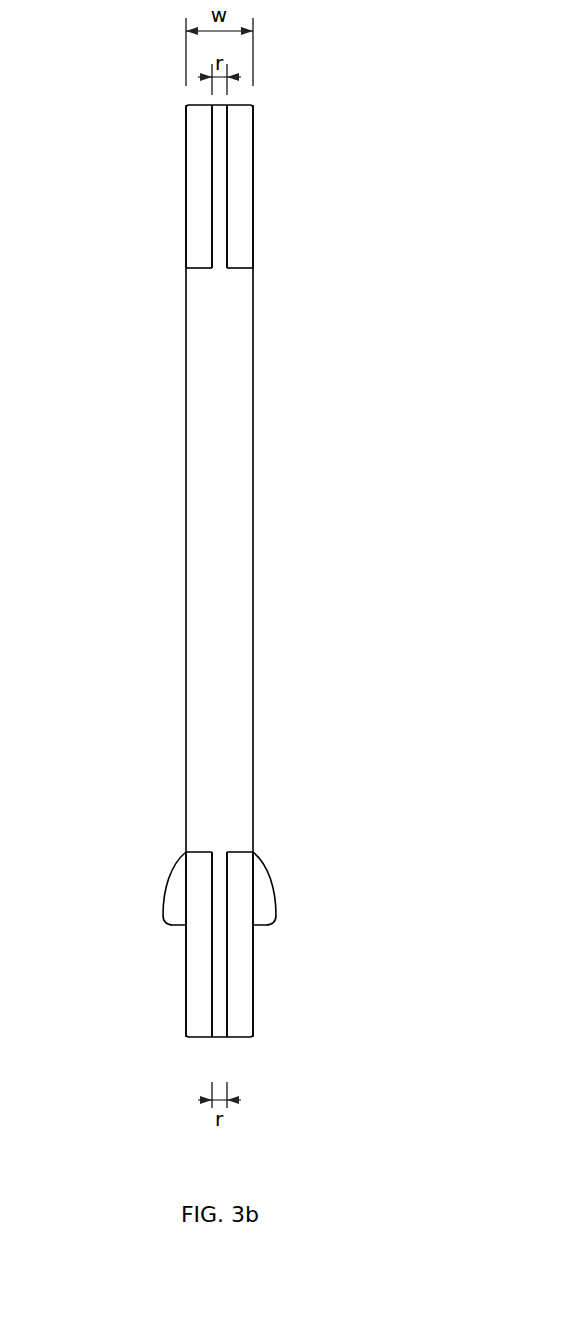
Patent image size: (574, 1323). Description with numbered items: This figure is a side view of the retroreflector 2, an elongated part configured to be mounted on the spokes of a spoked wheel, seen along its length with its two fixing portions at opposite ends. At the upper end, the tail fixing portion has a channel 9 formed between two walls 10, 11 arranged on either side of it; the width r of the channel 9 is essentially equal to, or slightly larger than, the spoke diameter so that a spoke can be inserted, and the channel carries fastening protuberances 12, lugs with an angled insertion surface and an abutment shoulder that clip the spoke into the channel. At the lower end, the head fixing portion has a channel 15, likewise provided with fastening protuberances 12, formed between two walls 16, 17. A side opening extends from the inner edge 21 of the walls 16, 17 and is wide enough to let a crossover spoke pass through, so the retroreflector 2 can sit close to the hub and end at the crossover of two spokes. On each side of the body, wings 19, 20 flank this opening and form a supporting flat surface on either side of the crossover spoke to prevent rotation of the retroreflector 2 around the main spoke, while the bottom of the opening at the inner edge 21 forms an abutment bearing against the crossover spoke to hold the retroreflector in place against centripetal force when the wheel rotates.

The retroreflector 2 is at (334, 545).
The channel 9 is at (222, 176).
The wall 10 is at (261, 215).
The wall 11 is at (178, 215).
The fastening protuberances 12 is at (215, 118).
The channel 15 is at (220, 1038).
The wall 16 is at (261, 965).
The wall 17 is at (178, 965).
The wing 19 is at (284, 893).
The wing 20 is at (155, 893).
The inner edge 21 is at (191, 840).